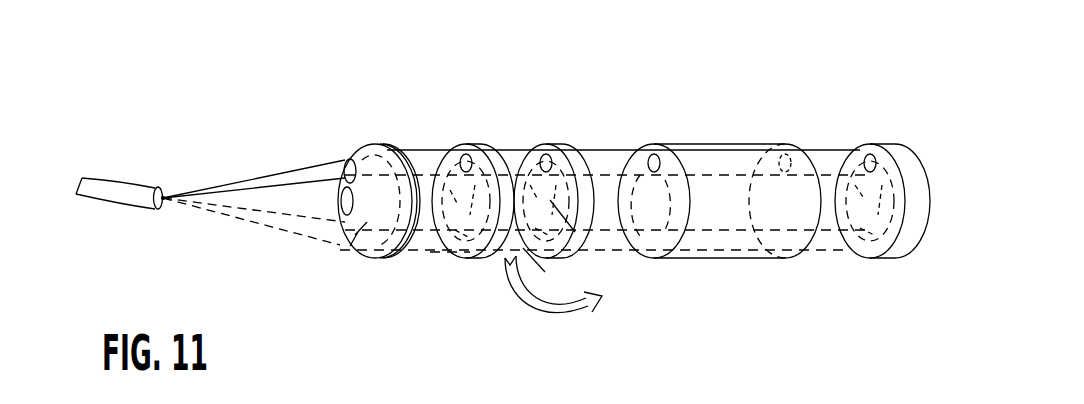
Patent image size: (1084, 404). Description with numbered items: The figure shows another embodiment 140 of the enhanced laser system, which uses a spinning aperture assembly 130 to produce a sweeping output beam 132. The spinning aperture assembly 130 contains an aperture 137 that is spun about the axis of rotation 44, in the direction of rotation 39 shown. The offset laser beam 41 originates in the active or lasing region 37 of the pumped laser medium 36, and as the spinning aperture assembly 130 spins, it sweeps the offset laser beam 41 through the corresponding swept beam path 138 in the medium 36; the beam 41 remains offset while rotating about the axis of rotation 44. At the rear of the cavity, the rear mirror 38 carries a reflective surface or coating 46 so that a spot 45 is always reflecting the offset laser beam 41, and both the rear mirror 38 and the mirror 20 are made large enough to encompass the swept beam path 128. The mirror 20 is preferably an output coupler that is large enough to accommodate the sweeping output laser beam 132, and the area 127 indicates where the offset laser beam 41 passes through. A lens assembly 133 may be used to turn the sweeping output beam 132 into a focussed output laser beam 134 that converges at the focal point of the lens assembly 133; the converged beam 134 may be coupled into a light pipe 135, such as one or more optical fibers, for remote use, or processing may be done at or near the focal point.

The mirror 20 is at (480, 258).
The pumped laser medium 36 is at (720, 258).
The active or lasing region 37 is at (652, 148).
The rear mirror 38 is at (905, 148).
The direction of rotation 39 is at (545, 315).
The offset laser beam 41 is at (524, 148).
The axis of rotation 44 is at (575, 232).
The spot 45 is at (872, 148).
The reflective surface or coating 46 is at (885, 225).
The area 127 is at (466, 148).
The swept beam path 128 is at (437, 250).
The spinning aperture assembly 130 is at (568, 148).
The sweeping output beam 132 is at (422, 148).
The lens assembly 133 is at (373, 255).
The focussed output laser beam 134 is at (250, 178).
The light pipe 135 is at (148, 180).
The aperture 137 is at (552, 148).
The swept beam path 138 is at (549, 277).
The embodiment 140 is at (727, 95).